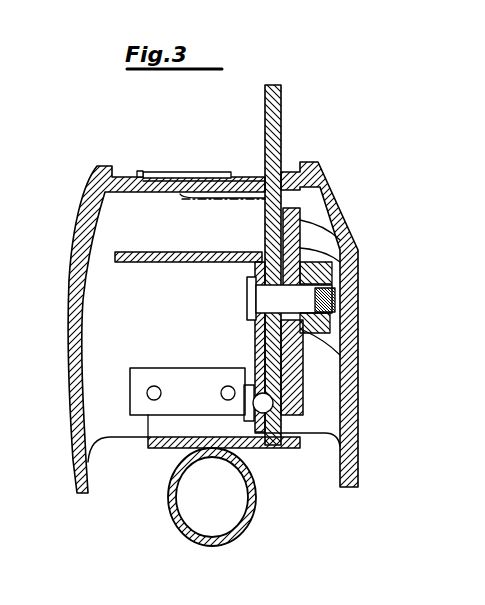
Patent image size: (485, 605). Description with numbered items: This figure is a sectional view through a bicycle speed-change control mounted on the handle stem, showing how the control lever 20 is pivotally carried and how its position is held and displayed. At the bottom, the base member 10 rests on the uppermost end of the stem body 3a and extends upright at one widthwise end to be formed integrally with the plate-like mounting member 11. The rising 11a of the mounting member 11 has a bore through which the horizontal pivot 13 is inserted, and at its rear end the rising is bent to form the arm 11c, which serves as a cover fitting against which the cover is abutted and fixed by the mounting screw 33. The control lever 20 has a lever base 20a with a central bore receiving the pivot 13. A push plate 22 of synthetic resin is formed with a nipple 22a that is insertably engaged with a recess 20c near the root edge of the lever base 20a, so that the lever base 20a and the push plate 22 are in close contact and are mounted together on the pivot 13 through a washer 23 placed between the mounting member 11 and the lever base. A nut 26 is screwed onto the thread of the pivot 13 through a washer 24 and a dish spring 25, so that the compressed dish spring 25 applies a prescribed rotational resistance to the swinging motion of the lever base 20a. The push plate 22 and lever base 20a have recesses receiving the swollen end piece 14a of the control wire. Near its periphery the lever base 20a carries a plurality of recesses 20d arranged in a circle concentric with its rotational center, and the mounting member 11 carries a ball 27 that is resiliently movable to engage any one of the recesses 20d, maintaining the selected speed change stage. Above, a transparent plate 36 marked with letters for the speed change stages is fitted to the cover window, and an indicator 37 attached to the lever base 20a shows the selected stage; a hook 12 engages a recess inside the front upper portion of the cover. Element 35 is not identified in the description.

The stem body 3a is at (189, 543).
The base member 10 is at (170, 448).
The mounting member 11 is at (305, 372).
The rising 11a is at (253, 350).
The arm 11c is at (122, 440).
The hook 12 is at (160, 252).
The pivot 13 is at (318, 312).
The swollen end piece 14a is at (300, 215).
The control lever 20 is at (282, 121).
The lever base 20a is at (302, 258).
The recess 20c is at (303, 390).
The recesses 20d is at (289, 420).
The push plate 22 is at (340, 438).
The nipple 22a is at (303, 410).
The washer 23 is at (302, 238).
The washer 24 is at (310, 276).
The dish spring 25 is at (320, 297).
The nut 26 is at (320, 330).
The ball 27 is at (268, 420).
The mounting screw 33 is at (152, 386).
The gasket 35 is at (148, 178).
The transparent plate 36 is at (172, 176).
The indicator 37 is at (212, 198).